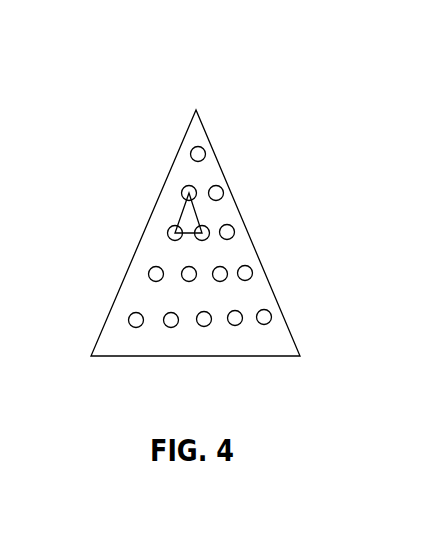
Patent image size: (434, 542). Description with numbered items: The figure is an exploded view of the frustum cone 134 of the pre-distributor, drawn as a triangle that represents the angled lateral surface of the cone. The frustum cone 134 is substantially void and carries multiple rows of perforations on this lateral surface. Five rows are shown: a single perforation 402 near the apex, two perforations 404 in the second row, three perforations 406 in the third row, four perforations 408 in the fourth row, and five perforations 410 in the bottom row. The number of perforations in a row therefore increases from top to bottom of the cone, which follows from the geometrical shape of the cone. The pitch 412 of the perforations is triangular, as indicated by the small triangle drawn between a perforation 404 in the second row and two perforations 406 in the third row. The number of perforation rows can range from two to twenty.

The frustum cone 134 is at (203, 72).
The perforation 402 is at (205, 152).
The perforation 404 is at (223, 193).
The perforation 406 is at (234, 229).
The perforation 408 is at (252, 273).
The perforation 410 is at (271, 318).
The pitch 412 is at (181, 212).